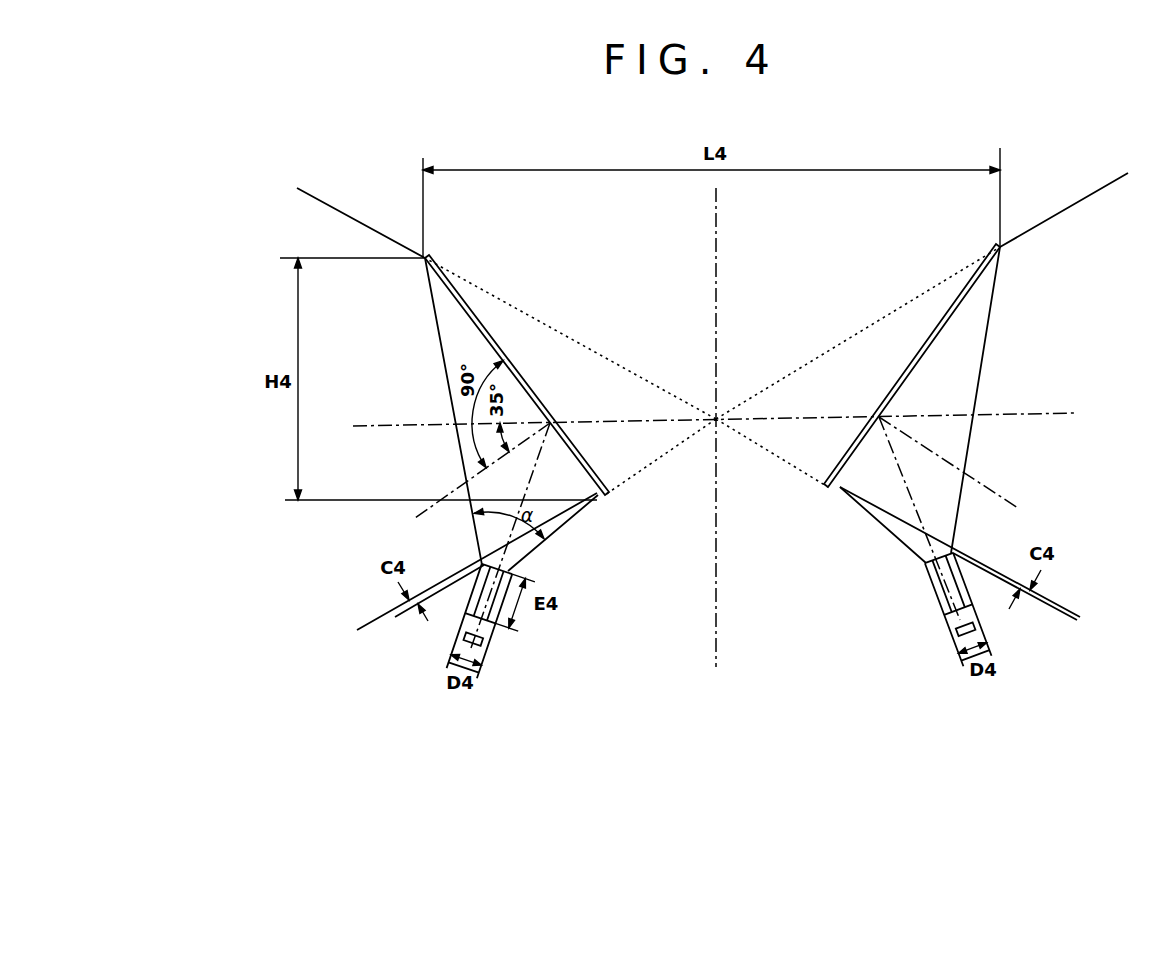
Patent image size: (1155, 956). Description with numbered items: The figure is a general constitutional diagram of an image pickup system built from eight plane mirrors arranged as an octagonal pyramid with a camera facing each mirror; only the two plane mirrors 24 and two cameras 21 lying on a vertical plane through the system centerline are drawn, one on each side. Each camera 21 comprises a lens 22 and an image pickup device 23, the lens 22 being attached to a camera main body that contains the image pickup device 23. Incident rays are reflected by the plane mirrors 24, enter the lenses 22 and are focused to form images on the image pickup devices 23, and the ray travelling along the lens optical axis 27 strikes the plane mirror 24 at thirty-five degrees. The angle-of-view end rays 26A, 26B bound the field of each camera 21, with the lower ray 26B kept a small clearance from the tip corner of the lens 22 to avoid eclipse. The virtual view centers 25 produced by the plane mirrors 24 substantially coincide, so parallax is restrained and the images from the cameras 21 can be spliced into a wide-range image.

The camera 21 is at (575, 627).
The lens 22 is at (511, 627).
The image pickup device 23 is at (485, 648).
The plane mirror 24 is at (472, 304).
The virtual view center 25 is at (716, 419).
The angle-of-view end ray 26A is at (345, 212).
The angle-of-view end ray 26B is at (362, 626).
The lens optical axis 27 is at (905, 470).